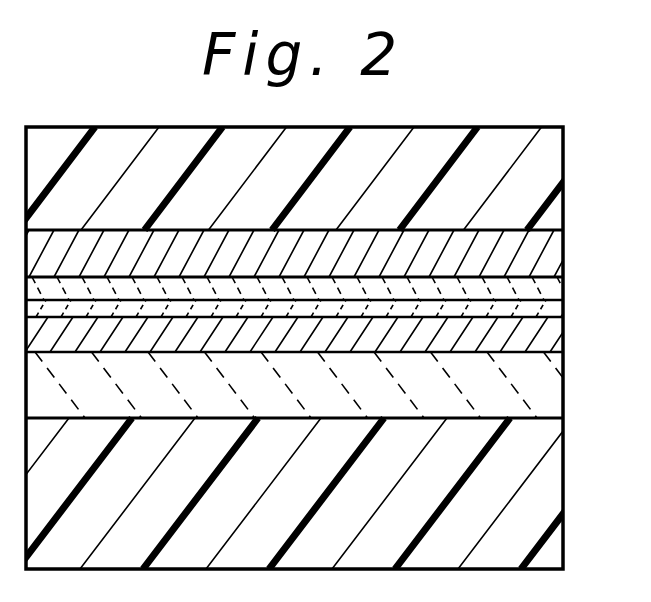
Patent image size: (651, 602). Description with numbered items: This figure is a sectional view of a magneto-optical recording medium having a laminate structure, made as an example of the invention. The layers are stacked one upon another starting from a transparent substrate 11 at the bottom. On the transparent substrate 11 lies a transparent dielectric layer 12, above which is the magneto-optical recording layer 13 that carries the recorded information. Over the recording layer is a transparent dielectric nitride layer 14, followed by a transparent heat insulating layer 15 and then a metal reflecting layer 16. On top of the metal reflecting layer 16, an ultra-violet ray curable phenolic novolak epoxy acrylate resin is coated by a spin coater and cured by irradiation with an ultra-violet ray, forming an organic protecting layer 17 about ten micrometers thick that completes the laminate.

The transparent substrate 11 is at (548, 502).
The transparent dielectric layer 12 is at (550, 402).
The magneto-optical recording layer 13 is at (545, 338).
The transparent dielectric nitride layer 14 is at (543, 313).
The transparent heat insulating layer 15 is at (548, 293).
The metal reflecting layer 16 is at (545, 253).
The organic protecting layer 17 is at (548, 171).